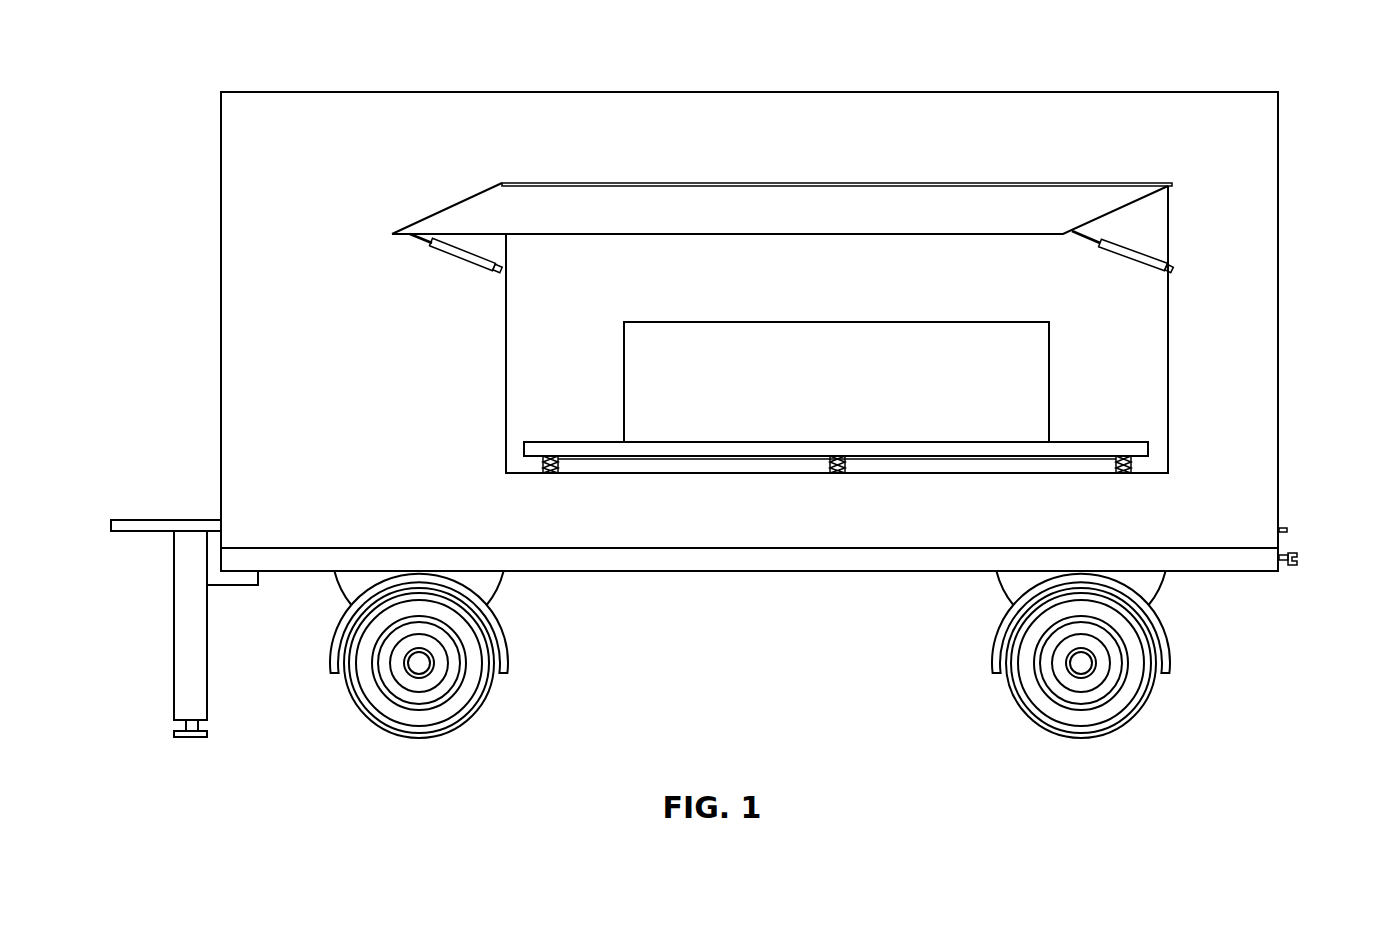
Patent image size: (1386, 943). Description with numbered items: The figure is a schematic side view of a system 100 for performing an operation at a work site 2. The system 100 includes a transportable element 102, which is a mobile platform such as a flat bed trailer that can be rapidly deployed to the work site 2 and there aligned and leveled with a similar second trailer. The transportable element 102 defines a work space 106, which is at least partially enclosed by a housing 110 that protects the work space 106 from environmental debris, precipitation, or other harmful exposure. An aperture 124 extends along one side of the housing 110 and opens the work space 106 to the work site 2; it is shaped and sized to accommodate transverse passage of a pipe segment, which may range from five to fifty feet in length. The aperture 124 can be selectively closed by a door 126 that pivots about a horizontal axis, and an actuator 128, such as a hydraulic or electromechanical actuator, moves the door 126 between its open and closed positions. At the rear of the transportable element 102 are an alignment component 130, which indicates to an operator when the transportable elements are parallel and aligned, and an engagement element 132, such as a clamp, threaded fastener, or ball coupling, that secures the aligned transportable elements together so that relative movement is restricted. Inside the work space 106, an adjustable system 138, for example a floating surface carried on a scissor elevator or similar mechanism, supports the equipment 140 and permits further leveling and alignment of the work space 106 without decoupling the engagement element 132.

The system 100 is at (1221, 54).
The transportable element 102 is at (641, 572).
The work space 106 is at (1143, 398).
The housing 110 is at (325, 394).
The aperture 124 is at (1168, 325).
The door 126 is at (816, 221).
The actuator 128 is at (1135, 245).
The alignment component 130 is at (1287, 530).
The engagement element 132 is at (1296, 566).
The adjustable system 138 is at (1127, 450).
The equipment 140 is at (816, 394).
The work site 2 is at (1302, 701).